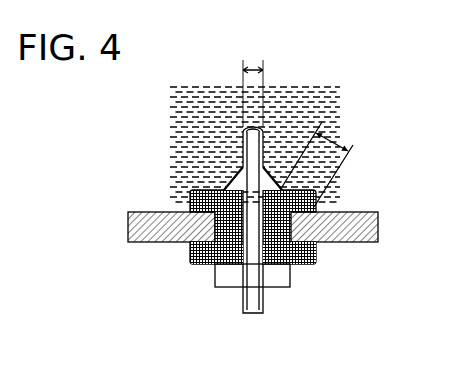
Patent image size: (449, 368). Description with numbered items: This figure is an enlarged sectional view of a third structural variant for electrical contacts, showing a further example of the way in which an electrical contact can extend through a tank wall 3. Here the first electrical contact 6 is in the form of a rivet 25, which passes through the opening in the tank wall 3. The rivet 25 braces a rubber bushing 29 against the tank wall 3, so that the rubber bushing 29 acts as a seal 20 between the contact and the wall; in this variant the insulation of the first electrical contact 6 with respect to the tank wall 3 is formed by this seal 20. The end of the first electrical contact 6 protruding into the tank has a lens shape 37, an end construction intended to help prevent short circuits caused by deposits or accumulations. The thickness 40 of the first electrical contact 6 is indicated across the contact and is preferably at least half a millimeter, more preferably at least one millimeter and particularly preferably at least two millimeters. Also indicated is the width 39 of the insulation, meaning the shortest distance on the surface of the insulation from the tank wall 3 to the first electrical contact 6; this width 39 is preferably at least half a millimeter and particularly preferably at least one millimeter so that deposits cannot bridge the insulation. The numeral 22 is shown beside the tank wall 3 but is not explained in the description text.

The tank wall 3 is at (350, 233).
The first electrical contact 6 is at (250, 305).
The seal 20 is at (314, 191).
The opening 22 is at (288, 268).
The rivet 25 is at (243, 140).
The rubber bushing 29 is at (192, 255).
The lens shape 37 is at (253, 126).
The width 39 is at (331, 129).
The thickness 40 is at (251, 68).